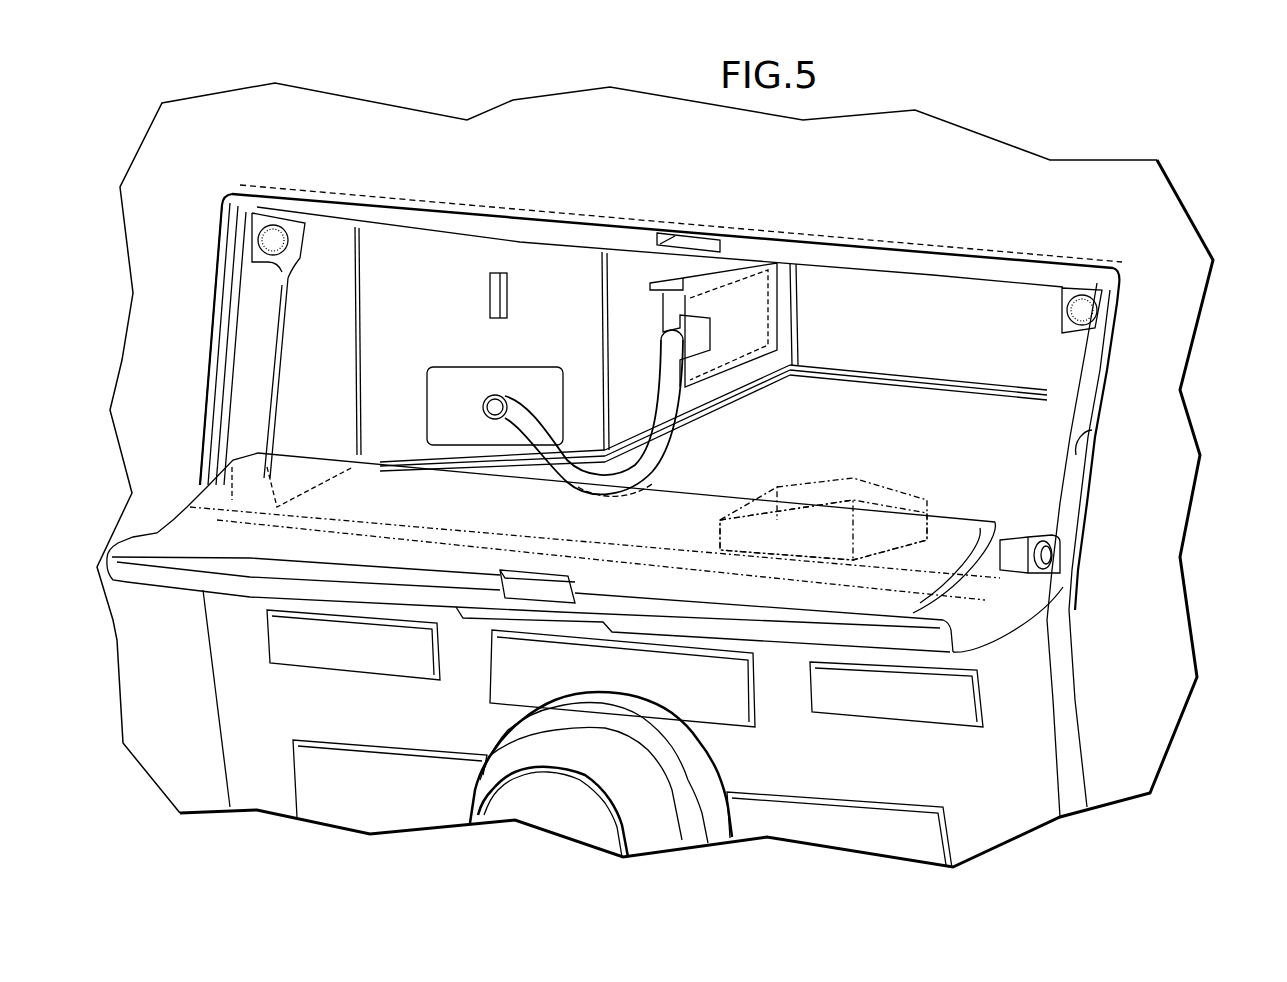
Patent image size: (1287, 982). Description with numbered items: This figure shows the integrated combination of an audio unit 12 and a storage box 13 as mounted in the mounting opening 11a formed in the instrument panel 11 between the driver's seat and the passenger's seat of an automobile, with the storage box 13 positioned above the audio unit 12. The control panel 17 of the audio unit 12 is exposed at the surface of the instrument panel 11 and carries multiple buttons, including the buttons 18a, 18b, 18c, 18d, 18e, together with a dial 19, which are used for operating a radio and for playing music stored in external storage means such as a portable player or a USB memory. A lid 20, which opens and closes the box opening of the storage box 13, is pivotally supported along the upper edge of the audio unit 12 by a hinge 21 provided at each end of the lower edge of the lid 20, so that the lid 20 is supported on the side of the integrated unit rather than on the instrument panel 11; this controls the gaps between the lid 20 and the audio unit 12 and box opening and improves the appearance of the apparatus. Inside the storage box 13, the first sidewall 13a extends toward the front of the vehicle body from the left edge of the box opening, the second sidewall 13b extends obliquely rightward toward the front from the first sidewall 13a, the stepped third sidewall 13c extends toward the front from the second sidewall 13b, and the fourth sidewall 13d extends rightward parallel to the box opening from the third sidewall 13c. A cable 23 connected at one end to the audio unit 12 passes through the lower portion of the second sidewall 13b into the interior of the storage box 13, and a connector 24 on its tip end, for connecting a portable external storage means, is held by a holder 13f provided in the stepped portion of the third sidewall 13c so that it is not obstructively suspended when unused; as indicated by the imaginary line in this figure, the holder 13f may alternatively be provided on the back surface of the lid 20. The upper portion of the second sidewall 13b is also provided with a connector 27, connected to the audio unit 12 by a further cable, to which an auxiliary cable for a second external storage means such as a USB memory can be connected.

The instrument panel 11 is at (1150, 228).
The mounting opening 11a is at (1076, 455).
The audio unit 12 is at (1084, 735).
The storage box 13 is at (1102, 388).
The first sidewall 13a is at (297, 342).
The second sidewall 13b is at (421, 243).
The third sidewall 13c is at (643, 262).
The fourth sidewall 13d is at (963, 291).
The holder 13f is at (759, 348).
The control panel 17 is at (807, 759).
The button 18a is at (350, 660).
The button 18b is at (510, 688).
The button 18c is at (912, 712).
The button 18d is at (337, 813).
The button 18e is at (808, 830).
The dial 19 is at (550, 812).
The lid 20 is at (181, 582).
The hinge 21 is at (1031, 532).
The cable 23 is at (646, 532).
The connector 24 is at (716, 340).
The connector 27 is at (500, 295).